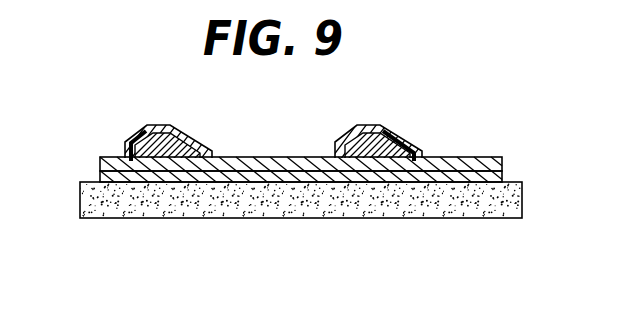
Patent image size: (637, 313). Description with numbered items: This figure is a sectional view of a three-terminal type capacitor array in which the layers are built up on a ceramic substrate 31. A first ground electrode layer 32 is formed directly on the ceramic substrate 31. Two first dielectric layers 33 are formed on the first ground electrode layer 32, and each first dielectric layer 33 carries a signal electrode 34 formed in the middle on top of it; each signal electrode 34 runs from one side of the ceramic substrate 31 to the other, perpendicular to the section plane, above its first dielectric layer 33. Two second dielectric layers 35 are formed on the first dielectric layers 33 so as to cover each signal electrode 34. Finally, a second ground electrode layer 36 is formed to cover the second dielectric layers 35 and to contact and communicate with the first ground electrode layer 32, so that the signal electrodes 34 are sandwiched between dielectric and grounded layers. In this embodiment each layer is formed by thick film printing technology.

The ceramic substrate 31 is at (327, 203).
The first ground electrode layer 32 is at (233, 180).
The first dielectric layer 33 is at (125, 158).
The signal electrode 34 is at (169, 156).
The second dielectric layer 35 is at (140, 130).
The second ground electrode layer 36 is at (269, 157).